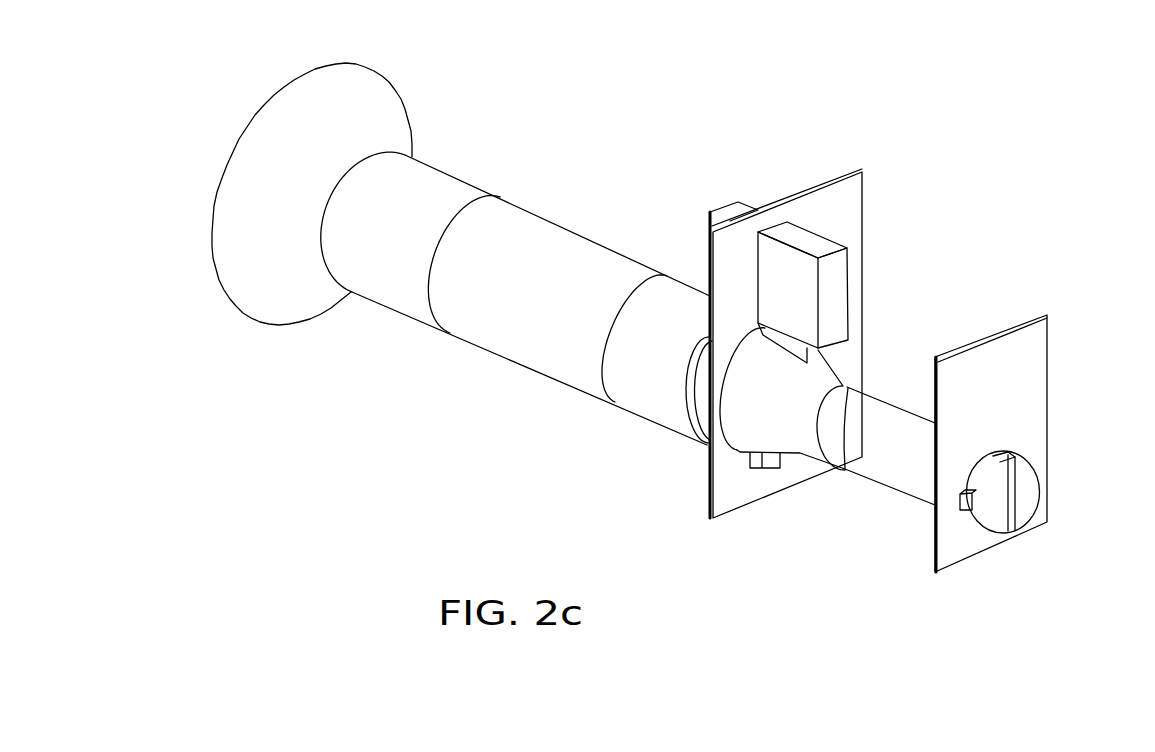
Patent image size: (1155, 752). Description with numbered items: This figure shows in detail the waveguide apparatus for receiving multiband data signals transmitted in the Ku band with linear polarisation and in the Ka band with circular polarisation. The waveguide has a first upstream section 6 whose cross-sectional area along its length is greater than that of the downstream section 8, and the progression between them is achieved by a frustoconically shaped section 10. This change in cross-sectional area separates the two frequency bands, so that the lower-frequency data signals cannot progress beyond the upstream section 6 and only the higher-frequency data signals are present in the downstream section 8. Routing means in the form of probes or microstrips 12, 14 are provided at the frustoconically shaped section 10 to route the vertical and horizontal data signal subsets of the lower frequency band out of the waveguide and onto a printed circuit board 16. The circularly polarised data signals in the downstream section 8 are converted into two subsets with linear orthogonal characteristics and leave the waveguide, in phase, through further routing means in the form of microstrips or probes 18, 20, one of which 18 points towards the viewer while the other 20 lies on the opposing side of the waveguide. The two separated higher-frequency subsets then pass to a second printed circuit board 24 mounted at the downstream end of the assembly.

The first upstream section 6 is at (597, 248).
The downstream section 8 is at (897, 480).
The frustoconically shaped section 10 is at (798, 445).
The probe 12 is at (760, 492).
The probe 14 is at (792, 287).
The printed circuit board 16 is at (813, 235).
The probe 18 is at (1025, 482).
The probe 20 is at (930, 535).
The printed circuit board 24 is at (1012, 343).